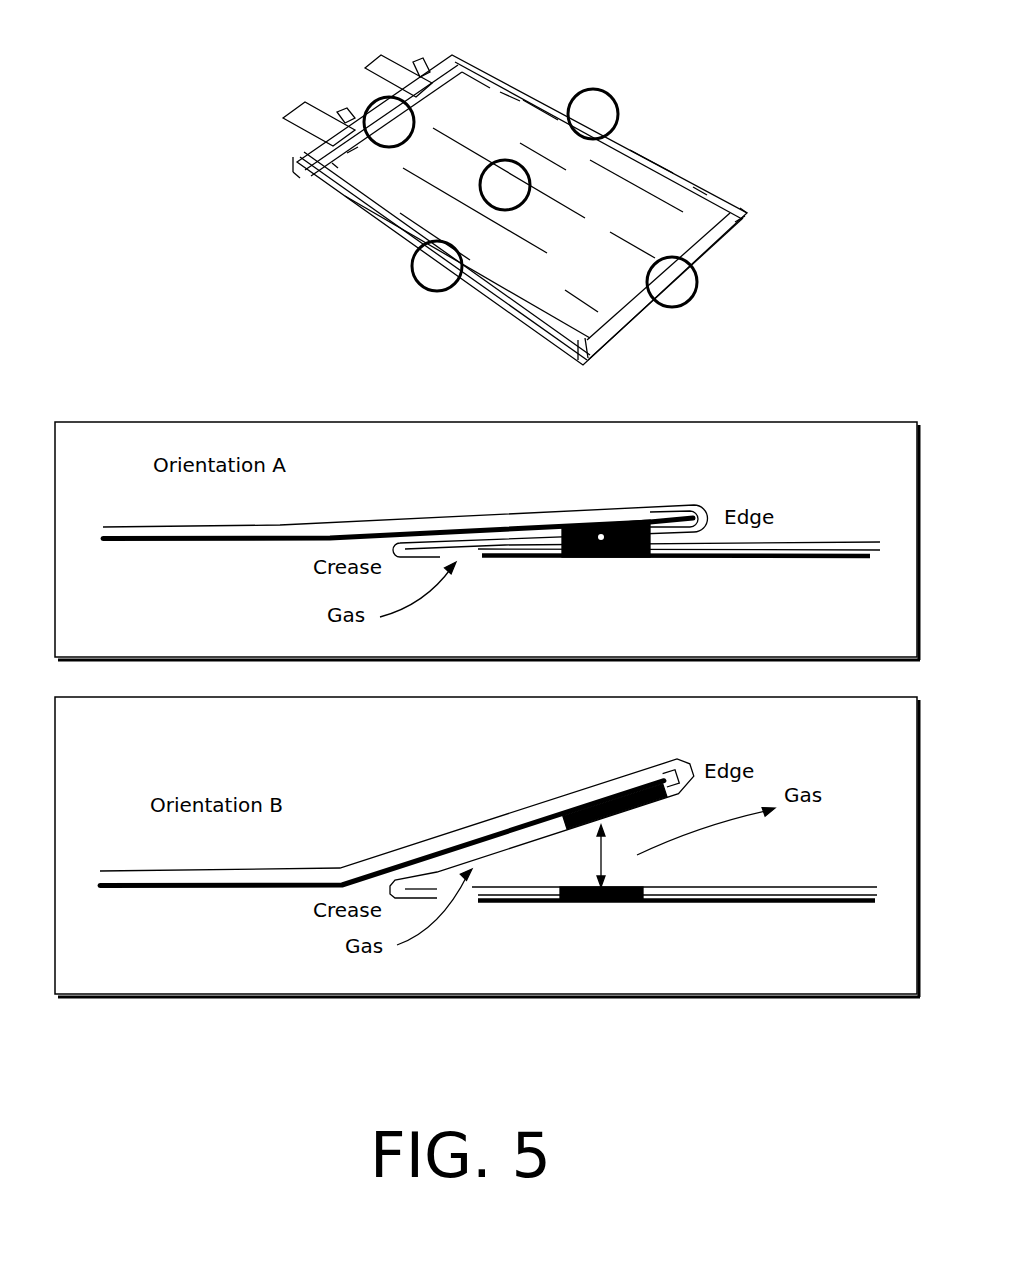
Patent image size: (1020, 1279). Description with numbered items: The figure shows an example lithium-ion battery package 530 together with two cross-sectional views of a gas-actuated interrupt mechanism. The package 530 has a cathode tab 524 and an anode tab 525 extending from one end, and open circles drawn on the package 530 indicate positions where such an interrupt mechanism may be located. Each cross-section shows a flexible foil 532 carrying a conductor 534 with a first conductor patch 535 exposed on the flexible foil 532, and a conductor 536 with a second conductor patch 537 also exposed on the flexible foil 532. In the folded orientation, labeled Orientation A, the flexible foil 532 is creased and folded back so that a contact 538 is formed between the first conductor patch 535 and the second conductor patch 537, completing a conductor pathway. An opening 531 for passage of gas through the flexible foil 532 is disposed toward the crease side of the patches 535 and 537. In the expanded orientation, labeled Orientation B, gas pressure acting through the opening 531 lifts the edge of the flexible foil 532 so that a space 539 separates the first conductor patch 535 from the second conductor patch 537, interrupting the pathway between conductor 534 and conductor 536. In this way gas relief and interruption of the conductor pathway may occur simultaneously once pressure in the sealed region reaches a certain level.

The cathode tab 524 is at (260, 104).
The anode tab 525 is at (356, 51).
The lithium-ion battery package 530 is at (497, 210).
The opening 531 is at (476, 552).
The flexible foil 532 is at (653, 504).
The conductor 534 is at (217, 540).
The first conductor patch 535 is at (598, 522).
The conductor 536 is at (712, 558).
The second conductor patch 537 is at (598, 560).
The contact 538 is at (612, 560).
The space 539 is at (596, 851).